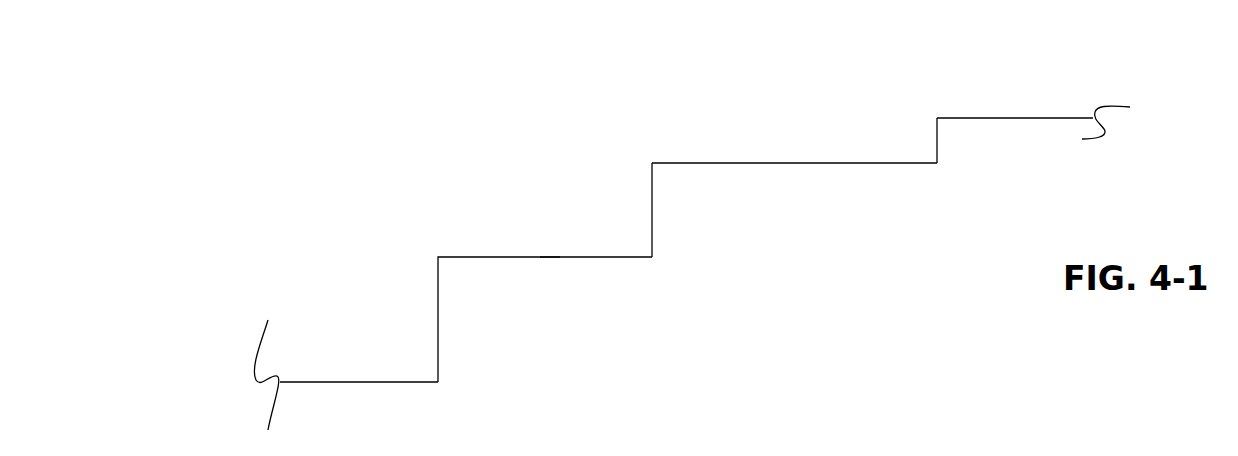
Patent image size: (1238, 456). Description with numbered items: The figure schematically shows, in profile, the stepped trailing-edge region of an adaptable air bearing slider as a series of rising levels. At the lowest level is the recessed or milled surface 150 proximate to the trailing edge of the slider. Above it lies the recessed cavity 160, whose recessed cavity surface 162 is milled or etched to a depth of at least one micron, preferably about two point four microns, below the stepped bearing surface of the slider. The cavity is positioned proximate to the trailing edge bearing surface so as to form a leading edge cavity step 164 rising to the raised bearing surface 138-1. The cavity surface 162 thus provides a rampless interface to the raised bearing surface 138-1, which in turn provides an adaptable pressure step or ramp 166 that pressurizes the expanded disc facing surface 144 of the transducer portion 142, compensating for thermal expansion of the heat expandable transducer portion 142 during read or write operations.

The recessed surface 150 is at (358, 382).
The recessed cavity 160 is at (470, 257).
The recessed cavity surface 162 is at (547, 257).
The leading edge cavity step 164 is at (651, 211).
The raised bearing surface 138-1 is at (750, 163).
The adaptable pressure step 166 is at (937, 132).
The transducer portion 142 is at (971, 118).
The disc facing surface 144 is at (1055, 118).